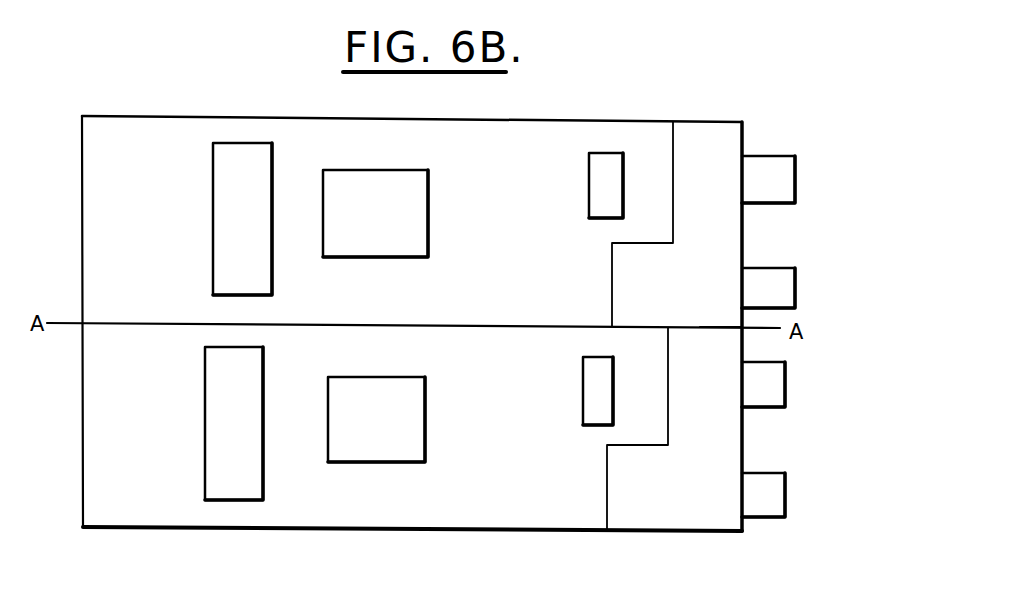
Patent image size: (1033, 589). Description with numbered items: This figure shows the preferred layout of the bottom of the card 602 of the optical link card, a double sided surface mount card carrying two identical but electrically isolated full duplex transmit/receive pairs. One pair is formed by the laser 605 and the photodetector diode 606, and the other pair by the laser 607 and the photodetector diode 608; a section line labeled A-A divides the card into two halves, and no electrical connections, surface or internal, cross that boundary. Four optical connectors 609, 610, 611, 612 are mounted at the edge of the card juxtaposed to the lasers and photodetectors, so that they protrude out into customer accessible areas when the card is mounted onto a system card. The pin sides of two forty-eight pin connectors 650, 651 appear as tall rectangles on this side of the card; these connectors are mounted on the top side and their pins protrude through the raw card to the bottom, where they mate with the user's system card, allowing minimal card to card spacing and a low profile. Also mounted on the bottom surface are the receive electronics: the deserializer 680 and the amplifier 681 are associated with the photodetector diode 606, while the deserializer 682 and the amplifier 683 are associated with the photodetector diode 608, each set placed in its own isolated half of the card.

The bottom of the card 602 is at (237, 529).
The laser 605 is at (705, 522).
The photodetector diode 606 is at (718, 349).
The laser 607 is at (728, 324).
The photodetector diode 608 is at (720, 150).
The optical connector 609 is at (788, 510).
The optical connector 610 is at (788, 372).
The optical connector 611 is at (797, 300).
The optical connector 612 is at (797, 163).
The connector 650 is at (212, 212).
The connector 651 is at (203, 427).
The deserializer 680 is at (427, 433).
The amplifier 681 is at (597, 428).
The deserializer 682 is at (431, 218).
The amplifier 683 is at (605, 221).